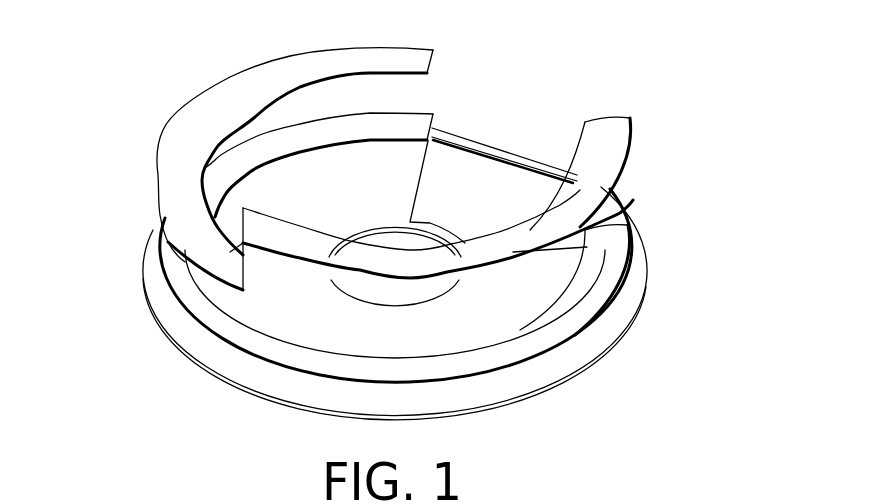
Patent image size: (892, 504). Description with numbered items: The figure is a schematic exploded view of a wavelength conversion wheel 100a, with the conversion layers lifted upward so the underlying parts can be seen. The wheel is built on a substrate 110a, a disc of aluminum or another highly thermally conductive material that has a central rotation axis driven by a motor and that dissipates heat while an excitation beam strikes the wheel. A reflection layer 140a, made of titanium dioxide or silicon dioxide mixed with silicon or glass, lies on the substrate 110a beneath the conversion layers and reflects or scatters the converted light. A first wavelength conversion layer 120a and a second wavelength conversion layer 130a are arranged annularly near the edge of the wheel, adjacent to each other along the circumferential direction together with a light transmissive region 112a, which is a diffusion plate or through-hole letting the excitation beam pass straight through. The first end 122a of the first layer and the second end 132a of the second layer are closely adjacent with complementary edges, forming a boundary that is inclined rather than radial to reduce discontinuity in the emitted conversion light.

The wavelength conversion wheel 100a is at (790, 474).
The substrate 110a is at (567, 358).
The light transmissive region 112a is at (468, 170).
The first wavelength conversion layer 120a is at (237, 98).
The first end 122a is at (243, 270).
The second wavelength conversion layer 130a is at (623, 147).
The second end 132a is at (243, 229).
The reflection layer 140a is at (593, 305).